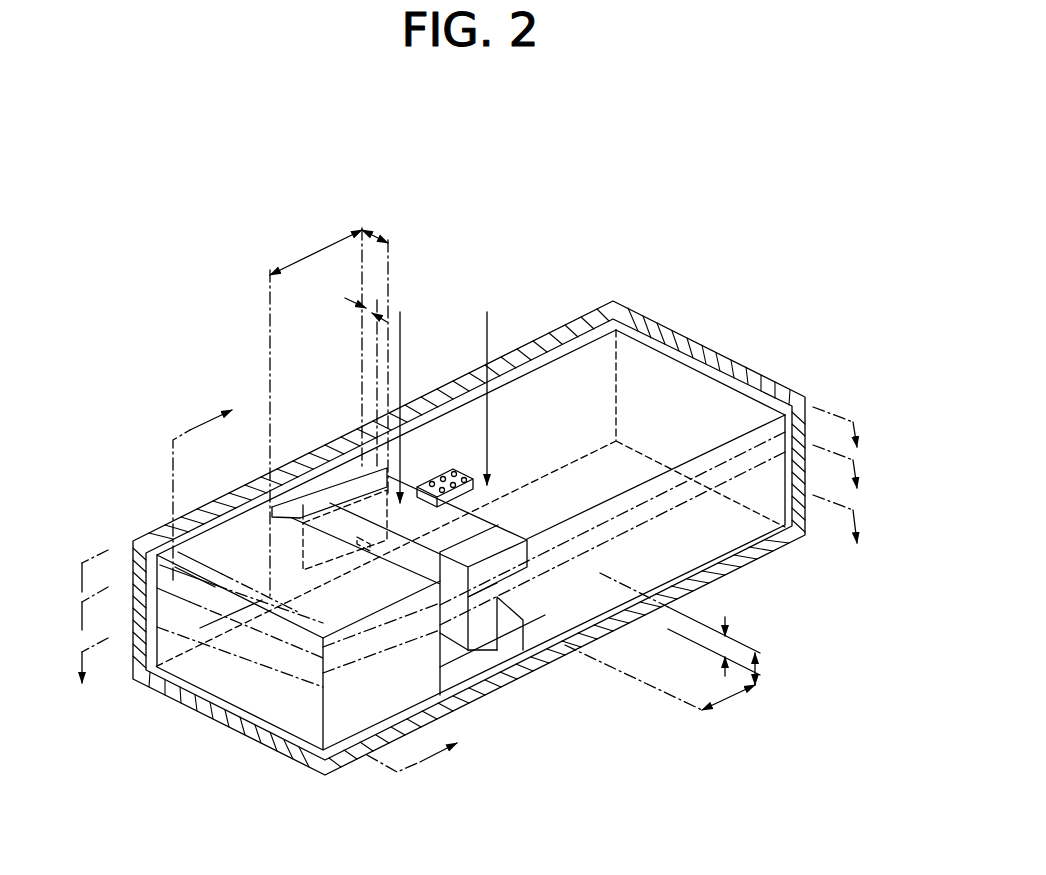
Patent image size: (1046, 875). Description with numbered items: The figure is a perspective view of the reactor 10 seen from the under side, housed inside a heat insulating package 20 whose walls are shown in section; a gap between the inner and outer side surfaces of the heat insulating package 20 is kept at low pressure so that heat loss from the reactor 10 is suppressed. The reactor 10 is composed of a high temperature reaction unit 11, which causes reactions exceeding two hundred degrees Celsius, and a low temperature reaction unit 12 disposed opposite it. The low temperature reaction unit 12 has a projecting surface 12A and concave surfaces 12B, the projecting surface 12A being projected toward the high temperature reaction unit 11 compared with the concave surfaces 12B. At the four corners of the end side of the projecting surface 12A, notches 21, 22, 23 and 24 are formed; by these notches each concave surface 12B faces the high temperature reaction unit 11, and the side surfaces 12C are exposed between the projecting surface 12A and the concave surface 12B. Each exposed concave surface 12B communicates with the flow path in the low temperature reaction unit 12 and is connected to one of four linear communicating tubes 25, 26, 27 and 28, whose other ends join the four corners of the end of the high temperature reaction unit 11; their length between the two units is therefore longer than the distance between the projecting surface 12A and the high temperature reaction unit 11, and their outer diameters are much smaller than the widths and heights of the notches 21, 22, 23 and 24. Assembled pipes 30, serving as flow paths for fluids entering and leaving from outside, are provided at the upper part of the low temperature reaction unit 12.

The reactor 10 is at (772, 198).
The high temperature reaction unit 11 is at (249, 686).
The low temperature reaction unit 12 is at (633, 363).
The projecting surface 12A is at (410, 555).
The concave surface 12B is at (358, 472).
The side surface 12C is at (545, 521).
The heat insulating package 20 is at (726, 361).
The notch 21 is at (480, 530).
The notch 22 is at (366, 470).
The notch 23 is at (510, 558).
The notch 24 is at (297, 590).
The communicating tube 25 is at (480, 575).
The communicating tube 26 is at (327, 481).
The communicating tube 27 is at (463, 680).
The communicating tube 28 is at (250, 555).
The assembled pipes 30 is at (455, 476).